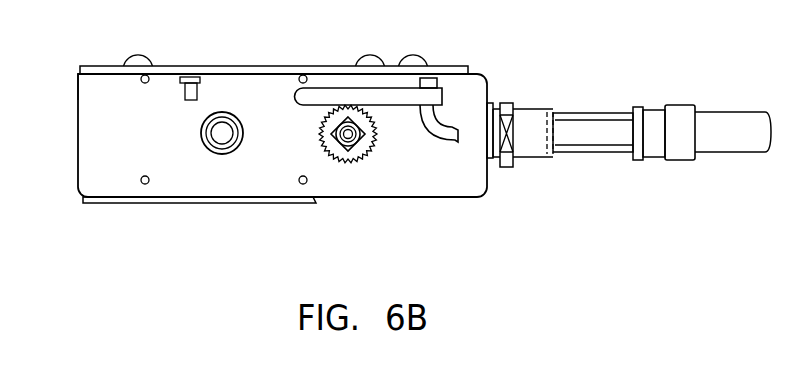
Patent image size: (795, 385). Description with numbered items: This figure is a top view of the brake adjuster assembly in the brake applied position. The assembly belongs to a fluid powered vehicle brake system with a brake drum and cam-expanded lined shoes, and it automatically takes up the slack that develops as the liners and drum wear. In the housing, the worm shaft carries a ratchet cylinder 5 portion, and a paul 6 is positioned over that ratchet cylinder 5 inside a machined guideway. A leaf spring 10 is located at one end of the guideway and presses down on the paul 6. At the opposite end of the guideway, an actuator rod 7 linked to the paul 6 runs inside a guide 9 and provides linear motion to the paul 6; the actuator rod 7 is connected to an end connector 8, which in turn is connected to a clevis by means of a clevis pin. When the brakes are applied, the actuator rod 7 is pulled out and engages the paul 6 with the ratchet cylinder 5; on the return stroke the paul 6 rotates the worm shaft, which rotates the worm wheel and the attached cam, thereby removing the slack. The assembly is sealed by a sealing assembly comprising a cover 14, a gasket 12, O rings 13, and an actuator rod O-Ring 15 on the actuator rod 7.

The ratchet cylinder 5 is at (333, 112).
The paul 6 is at (387, 95).
The actuator rod 7 is at (427, 85).
The end connector 8 is at (683, 113).
The guide 9 is at (508, 105).
The leaf spring 10 is at (223, 85).
The gasket 12 is at (80, 75).
The O rings 13 is at (142, 185).
The cover 14 is at (100, 65).
The actuator rod O-Ring 15 is at (551, 112).